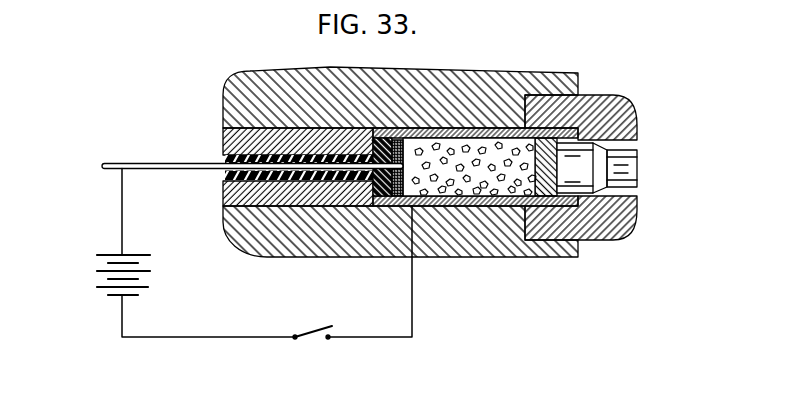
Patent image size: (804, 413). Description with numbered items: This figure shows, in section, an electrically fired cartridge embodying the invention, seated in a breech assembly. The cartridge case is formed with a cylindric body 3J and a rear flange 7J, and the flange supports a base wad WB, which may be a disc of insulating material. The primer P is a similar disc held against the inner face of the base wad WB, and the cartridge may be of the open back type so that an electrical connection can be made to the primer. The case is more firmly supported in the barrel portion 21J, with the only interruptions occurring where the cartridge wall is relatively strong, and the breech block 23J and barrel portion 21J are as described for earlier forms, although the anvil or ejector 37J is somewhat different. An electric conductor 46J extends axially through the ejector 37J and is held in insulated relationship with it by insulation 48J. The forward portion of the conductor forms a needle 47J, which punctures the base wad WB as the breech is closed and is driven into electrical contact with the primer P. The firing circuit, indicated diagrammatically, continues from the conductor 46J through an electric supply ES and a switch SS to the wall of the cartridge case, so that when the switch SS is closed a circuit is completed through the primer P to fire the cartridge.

The breech block 23J is at (468, 70).
The barrel portion 21J is at (630, 114).
The anvil or ejector 37J is at (282, 140).
The base wad WB is at (372, 140).
The insulation 48J is at (225, 158).
The electric conductor 46J is at (175, 171).
The rear flange 7J is at (382, 183).
The needle 47J is at (388, 184).
The primer P is at (407, 187).
The cylindric body 3J is at (483, 206).
The electric supply ES is at (95, 293).
The switch SS is at (312, 333).